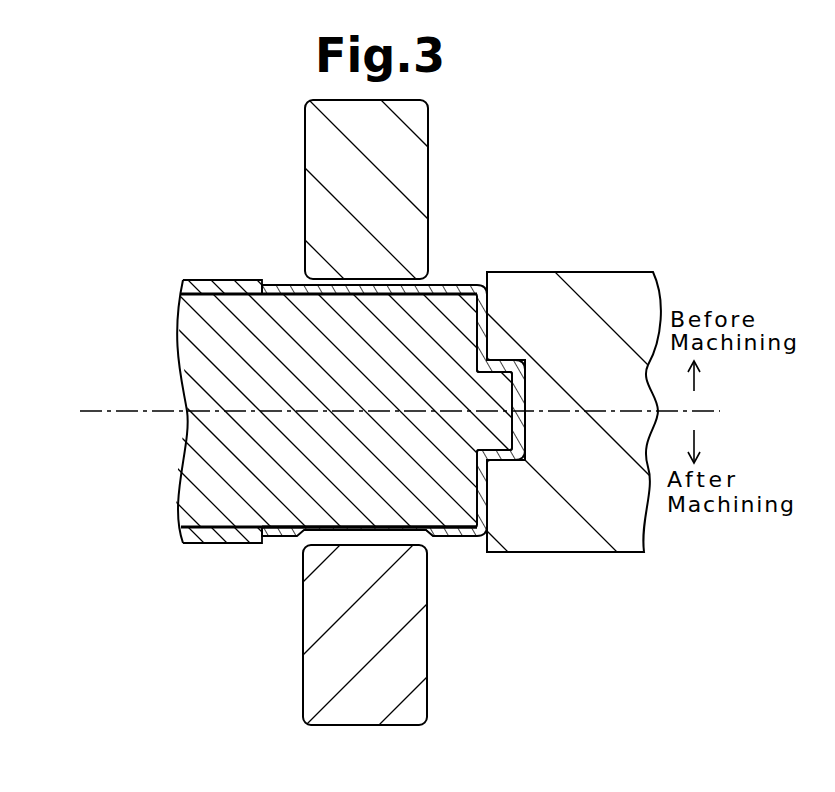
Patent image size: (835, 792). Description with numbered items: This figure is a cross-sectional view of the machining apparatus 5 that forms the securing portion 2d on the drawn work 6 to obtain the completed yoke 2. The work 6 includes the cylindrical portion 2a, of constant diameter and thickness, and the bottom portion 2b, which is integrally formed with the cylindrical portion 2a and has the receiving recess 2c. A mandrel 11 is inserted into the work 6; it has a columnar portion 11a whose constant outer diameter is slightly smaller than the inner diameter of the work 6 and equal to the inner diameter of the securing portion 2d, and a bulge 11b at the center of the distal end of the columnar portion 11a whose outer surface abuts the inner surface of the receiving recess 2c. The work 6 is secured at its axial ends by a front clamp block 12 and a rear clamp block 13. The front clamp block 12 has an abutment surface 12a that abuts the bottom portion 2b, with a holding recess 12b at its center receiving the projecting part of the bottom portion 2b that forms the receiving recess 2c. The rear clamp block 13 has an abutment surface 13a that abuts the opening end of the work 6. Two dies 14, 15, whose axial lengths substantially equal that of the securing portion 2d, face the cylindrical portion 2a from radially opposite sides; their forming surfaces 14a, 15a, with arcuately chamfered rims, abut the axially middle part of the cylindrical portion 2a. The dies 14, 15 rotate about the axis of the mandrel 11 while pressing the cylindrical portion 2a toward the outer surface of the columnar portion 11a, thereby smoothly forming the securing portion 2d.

The machining apparatus 5 is at (157, 196).
The mandrel 11 is at (179, 356).
The columnar portion 11a is at (275, 285).
The bulge 11b is at (526, 420).
The rear clamp block 13 is at (201, 279).
The abutment surface 13a is at (258, 546).
The yoke 2 is at (287, 540).
The cylindrical portion 2a is at (438, 538).
The bottom portion 2b is at (485, 503).
The receiving recess 2c is at (499, 462).
The securing portion 2d is at (330, 526).
The work 6 is at (439, 284).
The die 14 is at (429, 118).
The forming surface 14a is at (340, 296).
The die 15 is at (429, 698).
The forming surface 15a is at (433, 548).
The front clamp block 12 is at (632, 553).
The abutment surface 12a is at (490, 272).
The holding recess 12b is at (530, 378).